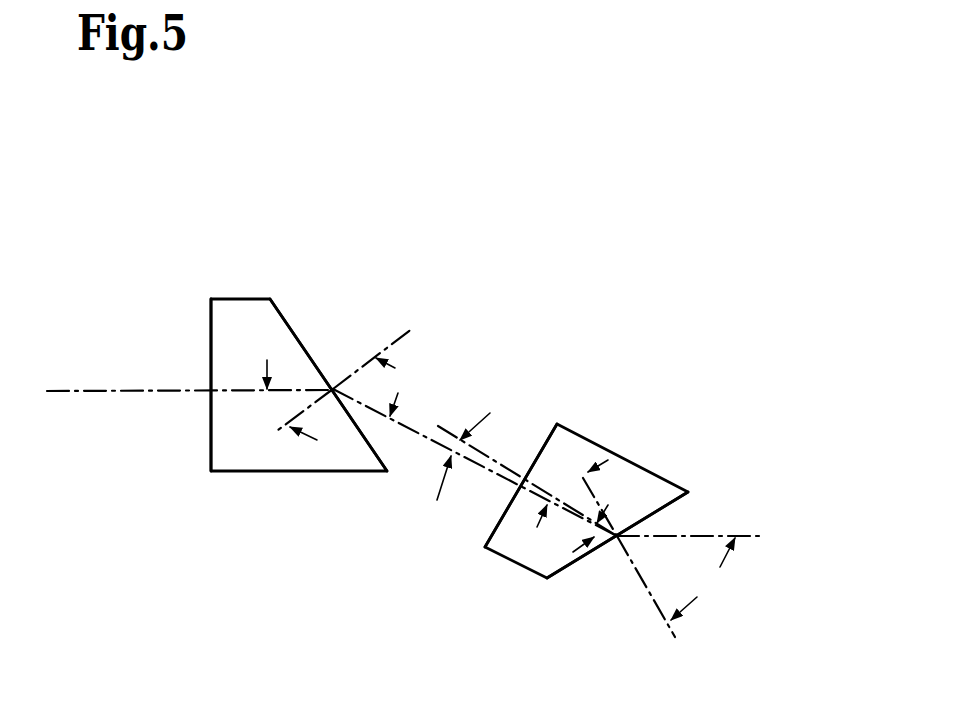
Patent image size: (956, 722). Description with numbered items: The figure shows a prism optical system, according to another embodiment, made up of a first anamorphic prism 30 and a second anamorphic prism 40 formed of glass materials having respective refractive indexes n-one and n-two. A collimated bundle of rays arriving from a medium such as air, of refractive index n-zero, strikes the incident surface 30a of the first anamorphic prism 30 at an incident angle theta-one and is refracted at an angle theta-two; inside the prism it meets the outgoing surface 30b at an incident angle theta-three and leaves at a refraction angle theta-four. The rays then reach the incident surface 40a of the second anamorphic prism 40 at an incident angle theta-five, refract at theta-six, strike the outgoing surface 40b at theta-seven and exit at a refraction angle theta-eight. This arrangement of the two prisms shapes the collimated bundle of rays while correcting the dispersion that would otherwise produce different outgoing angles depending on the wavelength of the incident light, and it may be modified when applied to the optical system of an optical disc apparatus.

The first anamorphic prism 30 is at (682, 357).
The incident surface of the first anamorphic prism 30a is at (683, 500).
The outgoing surface of the first anamorphic prism 30b is at (493, 530).
The second anamorphic prism 40 is at (290, 233).
The incident surface of the second anamorphic prism 40a is at (293, 330).
The outgoing surface of the second anamorphic prism 40b is at (210, 447).